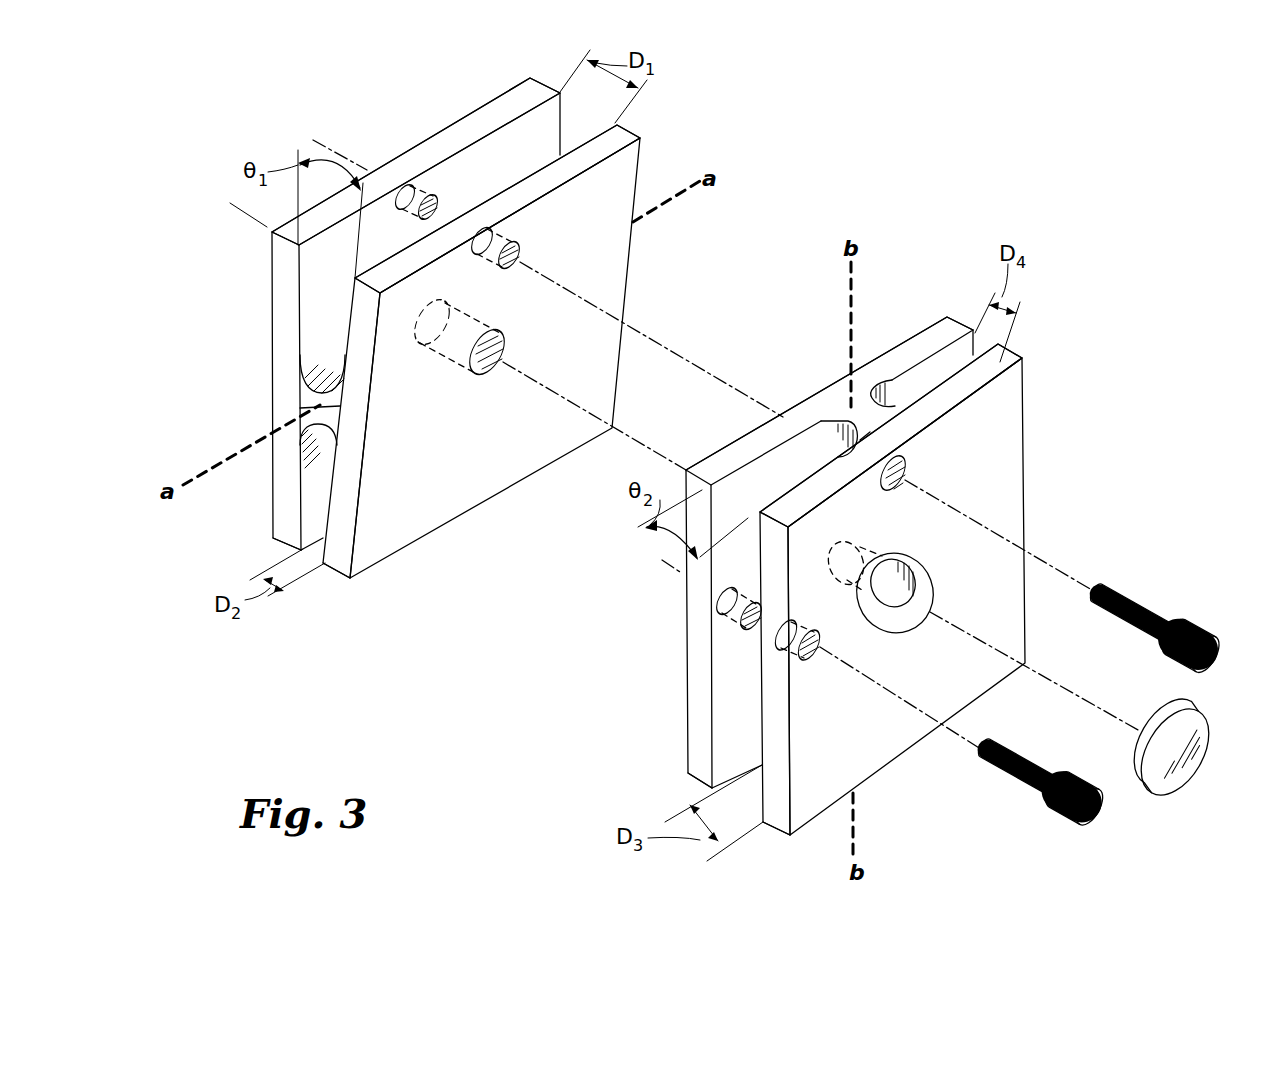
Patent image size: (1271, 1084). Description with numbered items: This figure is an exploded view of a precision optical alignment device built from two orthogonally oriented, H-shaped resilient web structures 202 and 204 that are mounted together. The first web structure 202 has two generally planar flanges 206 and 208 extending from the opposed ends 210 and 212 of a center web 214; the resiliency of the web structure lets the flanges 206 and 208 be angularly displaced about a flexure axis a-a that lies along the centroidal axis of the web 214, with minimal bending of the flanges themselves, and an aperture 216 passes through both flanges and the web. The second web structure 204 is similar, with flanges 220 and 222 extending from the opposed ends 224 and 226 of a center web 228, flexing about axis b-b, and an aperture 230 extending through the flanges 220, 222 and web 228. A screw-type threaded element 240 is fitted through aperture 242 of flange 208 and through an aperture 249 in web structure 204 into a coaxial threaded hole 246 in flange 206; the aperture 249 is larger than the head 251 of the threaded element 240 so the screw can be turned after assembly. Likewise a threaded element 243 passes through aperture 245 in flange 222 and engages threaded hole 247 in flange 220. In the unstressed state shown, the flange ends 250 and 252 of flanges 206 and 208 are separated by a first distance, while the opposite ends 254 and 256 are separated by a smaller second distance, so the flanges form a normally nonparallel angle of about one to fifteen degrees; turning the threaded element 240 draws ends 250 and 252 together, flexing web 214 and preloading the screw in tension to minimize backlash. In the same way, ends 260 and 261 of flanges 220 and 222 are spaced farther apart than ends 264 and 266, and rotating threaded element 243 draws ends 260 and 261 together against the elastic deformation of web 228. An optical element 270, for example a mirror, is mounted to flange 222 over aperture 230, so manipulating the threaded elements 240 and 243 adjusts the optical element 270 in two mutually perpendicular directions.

The web structure 202 is at (662, 163).
The web structure 204 is at (1040, 415).
The flange 206 is at (312, 270).
The flange 208 is at (474, 294).
The end of center web 210 is at (303, 402).
The end of center web 212 is at (337, 410).
The center web 214 is at (307, 410).
The aperture 216 is at (487, 370).
The flange 220 is at (767, 499).
The flange 222 is at (866, 528).
The end of center web 224 is at (840, 403).
The end of center web 226 is at (887, 422).
The center web 228 is at (853, 410).
The aperture 230 is at (870, 560).
The threaded element 240 is at (1147, 612).
The aperture 242 is at (500, 240).
The threaded element 243 is at (1013, 777).
The aperture 245 is at (813, 658).
The threaded hole 246 is at (425, 200).
The threaded hole 247 is at (747, 627).
The aperture 249 is at (912, 477).
The flange end 250 is at (552, 84).
The head 251 is at (1193, 670).
The flange end 252 is at (628, 127).
The flange end 254 is at (275, 538).
The flange end 256 is at (330, 578).
The flange end 260 is at (712, 778).
The flange end 261 is at (777, 827).
The flange end 264 is at (948, 327).
The flange end 266 is at (1012, 350).
The optical element 270 is at (1180, 765).